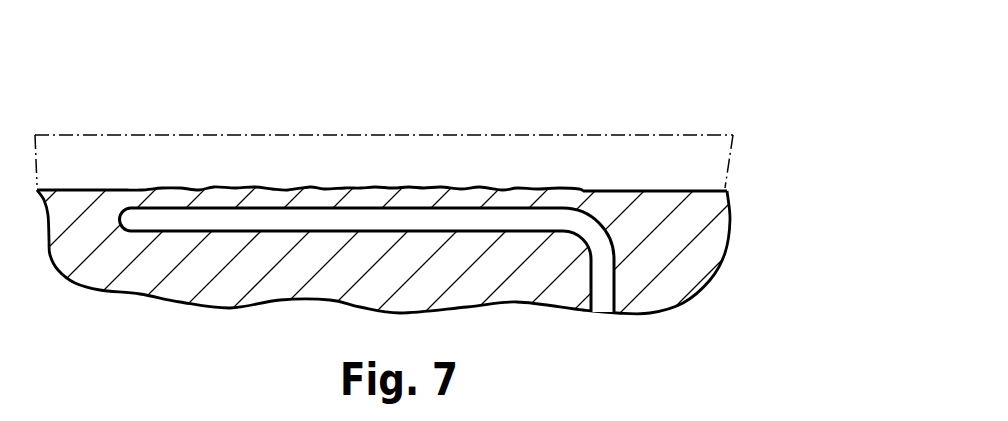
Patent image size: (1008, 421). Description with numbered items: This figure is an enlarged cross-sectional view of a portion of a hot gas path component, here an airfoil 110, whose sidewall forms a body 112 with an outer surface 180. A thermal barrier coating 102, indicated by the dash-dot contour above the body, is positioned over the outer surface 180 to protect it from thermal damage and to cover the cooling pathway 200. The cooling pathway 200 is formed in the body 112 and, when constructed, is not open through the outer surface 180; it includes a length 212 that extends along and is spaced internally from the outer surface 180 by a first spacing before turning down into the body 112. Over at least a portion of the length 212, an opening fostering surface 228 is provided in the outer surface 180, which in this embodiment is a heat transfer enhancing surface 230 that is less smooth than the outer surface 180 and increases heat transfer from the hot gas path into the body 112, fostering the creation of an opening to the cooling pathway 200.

The thermal barrier coating 102 is at (250, 157).
The airfoil 110 is at (447, 252).
The body 112 is at (682, 225).
The outer surface 180 is at (680, 191).
The cooling pathway 200 is at (357, 193).
The length 212 is at (180, 217).
The opening fostering surface 228 is at (355, 133).
The heat transfer enhancing surface 230 is at (329, 190).